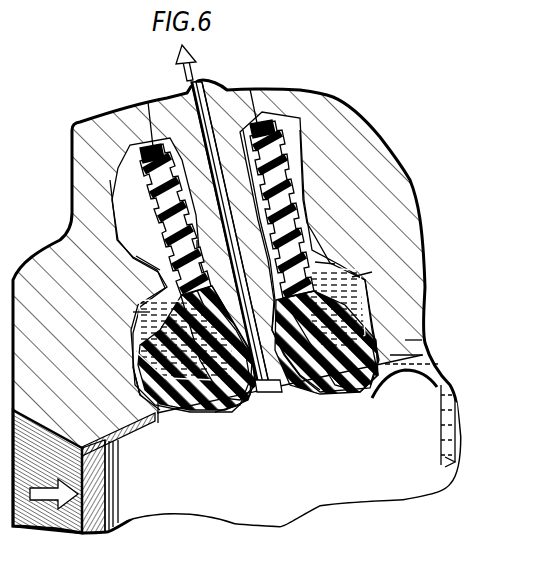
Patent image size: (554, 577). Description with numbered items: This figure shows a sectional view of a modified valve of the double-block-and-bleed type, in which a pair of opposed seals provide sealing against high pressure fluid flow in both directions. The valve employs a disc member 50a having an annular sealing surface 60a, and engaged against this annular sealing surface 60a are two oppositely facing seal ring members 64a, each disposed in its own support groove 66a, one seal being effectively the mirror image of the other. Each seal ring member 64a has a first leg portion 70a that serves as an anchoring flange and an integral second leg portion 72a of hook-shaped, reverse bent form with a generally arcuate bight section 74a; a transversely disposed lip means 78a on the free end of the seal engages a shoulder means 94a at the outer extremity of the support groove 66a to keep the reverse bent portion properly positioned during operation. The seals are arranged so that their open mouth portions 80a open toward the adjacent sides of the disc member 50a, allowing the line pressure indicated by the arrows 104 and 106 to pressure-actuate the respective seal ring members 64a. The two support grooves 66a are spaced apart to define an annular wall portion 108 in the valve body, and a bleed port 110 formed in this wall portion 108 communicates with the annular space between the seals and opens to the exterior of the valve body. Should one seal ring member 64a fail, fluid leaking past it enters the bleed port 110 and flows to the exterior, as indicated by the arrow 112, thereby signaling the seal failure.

The disc member 50a is at (248, 495).
The annular sealing surface 60a is at (191, 425).
The seal ring member 64a is at (157, 273).
The support groove 66a is at (145, 316).
The first leg portion 70a is at (152, 174).
The second leg portion 72a is at (166, 310).
The bight section 74a is at (213, 400).
The lip means 78a is at (135, 373).
The open mouth portion 80a is at (158, 311).
The shoulder means 94a is at (150, 418).
The arrow 104 is at (44, 497).
The arrow 106 is at (450, 470).
The annular wall portion 108 is at (275, 394).
The bleed port 110 is at (206, 86).
The arrow 112 is at (193, 53).